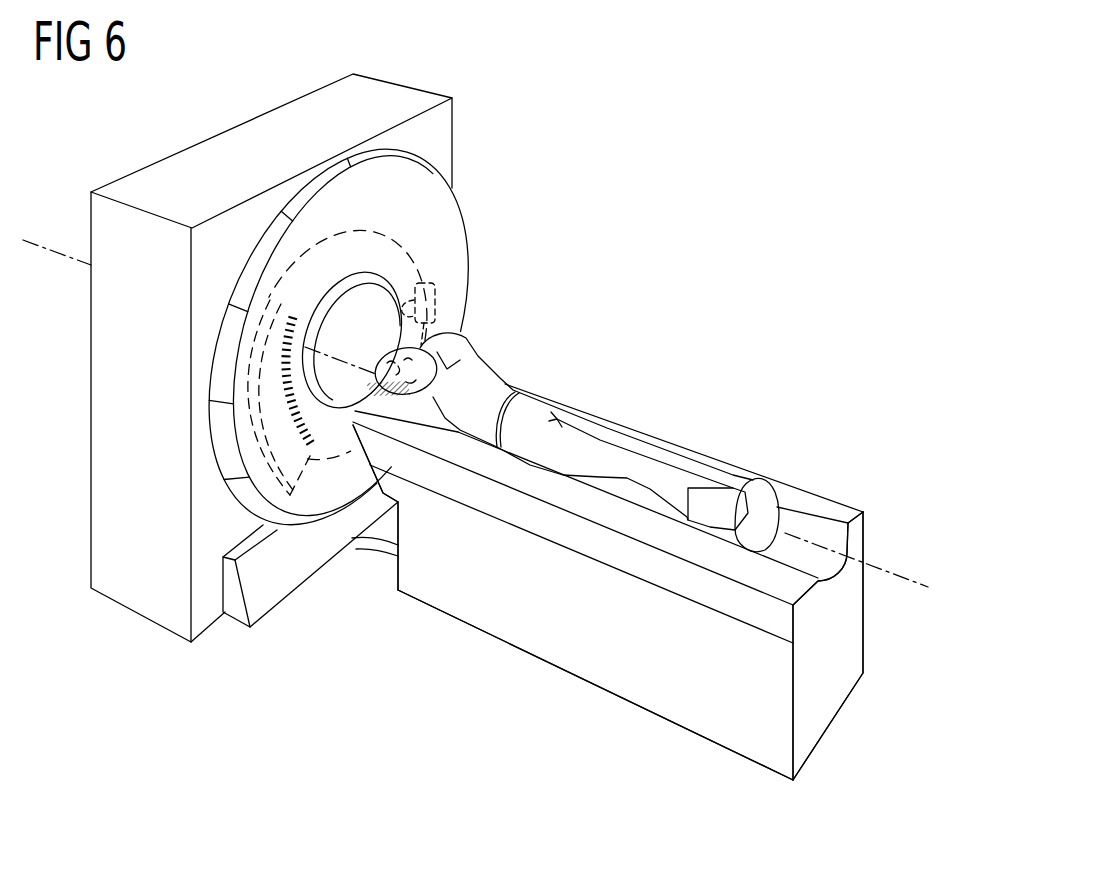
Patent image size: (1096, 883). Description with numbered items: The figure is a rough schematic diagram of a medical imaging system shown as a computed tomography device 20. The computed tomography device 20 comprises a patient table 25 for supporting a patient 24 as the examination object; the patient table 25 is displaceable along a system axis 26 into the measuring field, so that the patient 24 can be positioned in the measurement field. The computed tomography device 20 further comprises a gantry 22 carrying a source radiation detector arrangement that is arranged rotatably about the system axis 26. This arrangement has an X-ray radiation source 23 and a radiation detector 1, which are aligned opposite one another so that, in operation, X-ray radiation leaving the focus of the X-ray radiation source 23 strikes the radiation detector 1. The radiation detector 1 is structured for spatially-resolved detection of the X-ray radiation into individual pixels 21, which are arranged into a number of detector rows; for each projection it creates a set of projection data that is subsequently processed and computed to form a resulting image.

The computed tomography device 20 is at (453, 695).
The pixels 21 is at (283, 416).
The gantry 22 is at (381, 229).
The X-ray radiation source 23 is at (423, 282).
The patient 24 is at (470, 363).
The patient table 25 is at (770, 512).
The system axis 26 is at (882, 566).
The radiation detector 1 is at (268, 378).